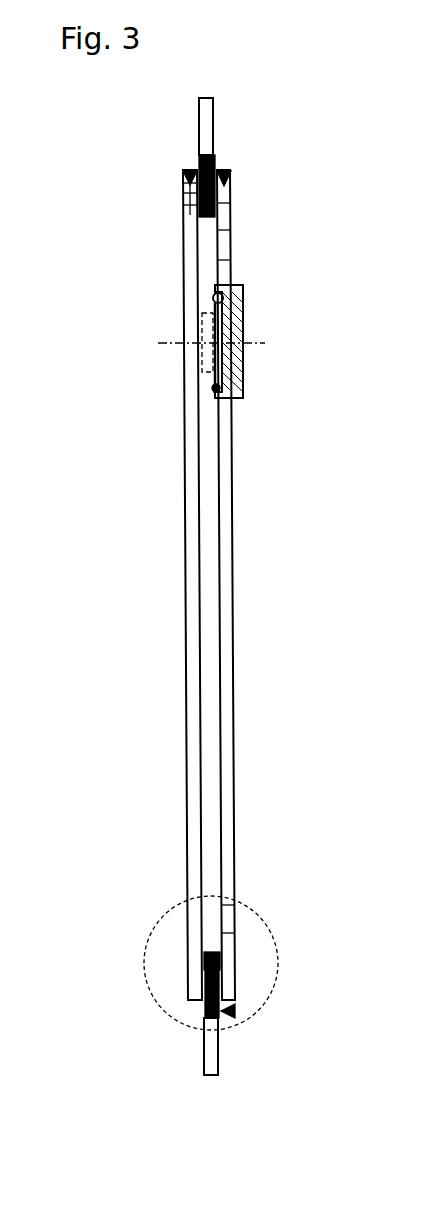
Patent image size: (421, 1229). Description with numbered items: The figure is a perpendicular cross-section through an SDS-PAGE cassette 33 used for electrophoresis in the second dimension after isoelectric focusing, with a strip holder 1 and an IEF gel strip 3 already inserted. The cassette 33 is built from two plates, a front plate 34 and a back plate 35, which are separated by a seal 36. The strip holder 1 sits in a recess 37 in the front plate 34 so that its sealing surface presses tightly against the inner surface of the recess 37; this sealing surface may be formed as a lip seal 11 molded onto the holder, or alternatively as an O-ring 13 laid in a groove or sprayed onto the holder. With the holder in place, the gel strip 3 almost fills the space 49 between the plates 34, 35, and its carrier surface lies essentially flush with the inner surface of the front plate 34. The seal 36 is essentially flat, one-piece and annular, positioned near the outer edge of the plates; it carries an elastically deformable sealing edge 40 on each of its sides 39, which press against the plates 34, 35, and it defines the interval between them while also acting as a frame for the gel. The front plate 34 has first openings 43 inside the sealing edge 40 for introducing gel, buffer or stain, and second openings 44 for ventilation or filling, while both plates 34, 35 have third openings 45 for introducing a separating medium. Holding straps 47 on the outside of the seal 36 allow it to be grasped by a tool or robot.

The strip holder 1 is at (291, 341).
The gel strip 3 is at (237, 360).
The lip seal 11 is at (213, 385).
The O-ring 13 is at (213, 300).
The SDS-PAGE cassette 33 is at (104, 157).
The front plate 34 is at (225, 532).
The back plate 35 is at (192, 573).
The seal 36 is at (213, 158).
The recess 37 is at (213, 390).
The sides 39 is at (232, 180).
The sealing edge 40 is at (215, 203).
The first openings 43 is at (223, 245).
The second openings 44 is at (228, 922).
The third openings 45 is at (187, 188).
The holding straps 47 is at (208, 113).
The space 49 is at (207, 653).